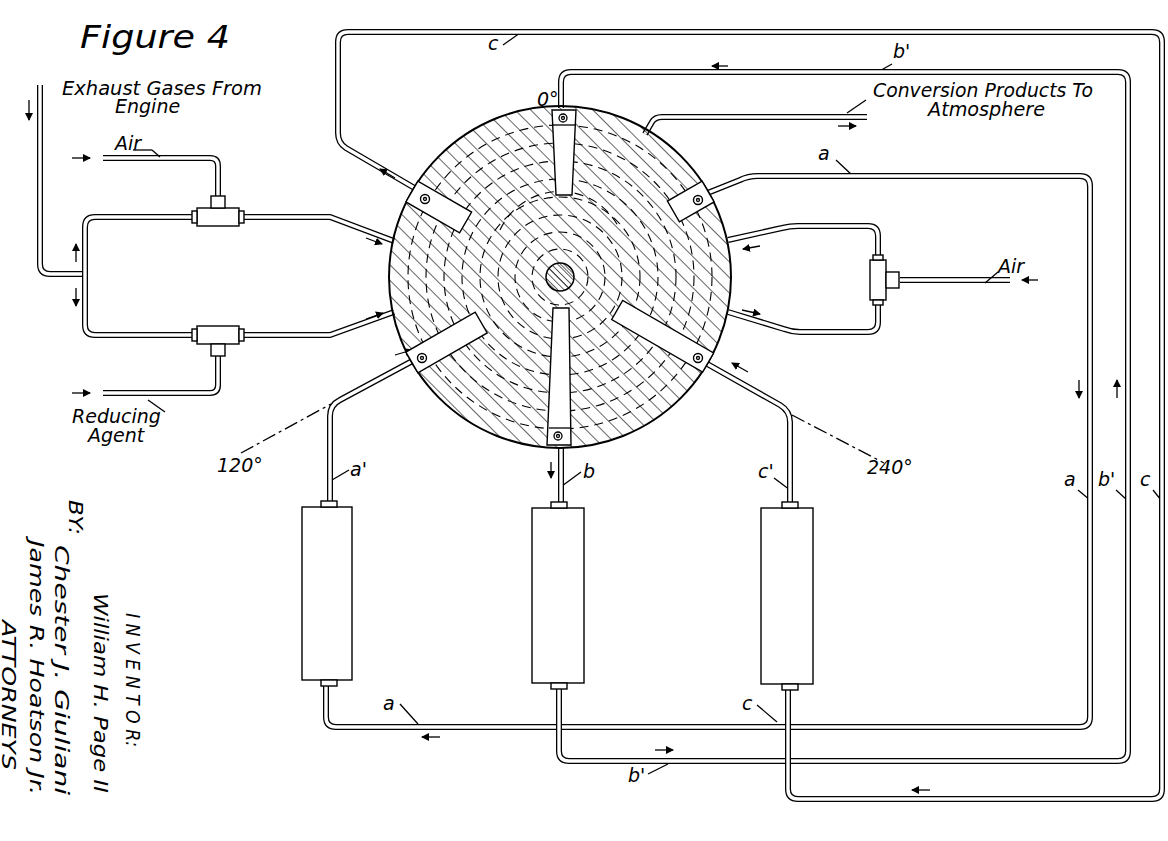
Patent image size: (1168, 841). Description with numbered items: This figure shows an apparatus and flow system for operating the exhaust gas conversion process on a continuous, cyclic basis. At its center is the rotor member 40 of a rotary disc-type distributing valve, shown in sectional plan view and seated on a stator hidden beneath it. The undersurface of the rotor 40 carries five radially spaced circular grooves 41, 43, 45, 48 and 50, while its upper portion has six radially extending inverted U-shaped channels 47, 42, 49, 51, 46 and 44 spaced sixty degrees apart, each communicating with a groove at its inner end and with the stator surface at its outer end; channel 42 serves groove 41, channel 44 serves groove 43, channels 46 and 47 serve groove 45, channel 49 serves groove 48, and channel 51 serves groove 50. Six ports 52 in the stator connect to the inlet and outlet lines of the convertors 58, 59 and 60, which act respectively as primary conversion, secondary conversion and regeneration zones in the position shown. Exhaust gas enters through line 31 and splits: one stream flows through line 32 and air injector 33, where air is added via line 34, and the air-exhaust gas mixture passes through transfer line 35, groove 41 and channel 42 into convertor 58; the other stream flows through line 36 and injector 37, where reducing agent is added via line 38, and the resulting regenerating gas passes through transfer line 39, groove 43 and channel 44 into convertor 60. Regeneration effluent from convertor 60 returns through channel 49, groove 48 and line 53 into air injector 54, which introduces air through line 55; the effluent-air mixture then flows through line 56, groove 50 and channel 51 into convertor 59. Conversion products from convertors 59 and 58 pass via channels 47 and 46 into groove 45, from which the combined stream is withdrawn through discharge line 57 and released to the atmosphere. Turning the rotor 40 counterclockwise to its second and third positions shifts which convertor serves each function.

The exhaust gas inlet line 31 is at (34, 262).
The exhaust gas line 32 is at (105, 220).
The air injector 33 is at (228, 204).
The air line 34 is at (133, 162).
The air-exhaust gas transfer line 35 is at (333, 223).
The exhaust gas line 36 is at (102, 332).
The injector 37 is at (228, 346).
The reducing agent line 38 is at (148, 392).
The regenerating gas transfer line 39 is at (333, 333).
The rotor member 40 is at (386, 274).
The circular groove 41 is at (525, 150).
The radially extending channel 42 is at (690, 212).
The circular groove 43 is at (640, 160).
The radially extending channel 44 is at (462, 220).
The circular groove 45 is at (505, 392).
The radially extending channel 46 is at (455, 352).
The radially extending channel 47 is at (572, 156).
The circular groove 48 is at (560, 287).
The radially extending channel 49 is at (665, 341).
The circular groove 50 is at (543, 226).
The radially extending channel 51 is at (516, 441).
The ports 52 is at (418, 201).
The line 53 is at (828, 334).
The air injector 54 is at (868, 280).
The air line 55 is at (945, 283).
The line 56 is at (826, 228).
The conversion products discharge line 57 is at (723, 116).
The convertor 58 is at (302, 575).
The convertor 59 is at (532, 580).
The convertor 60 is at (762, 580).